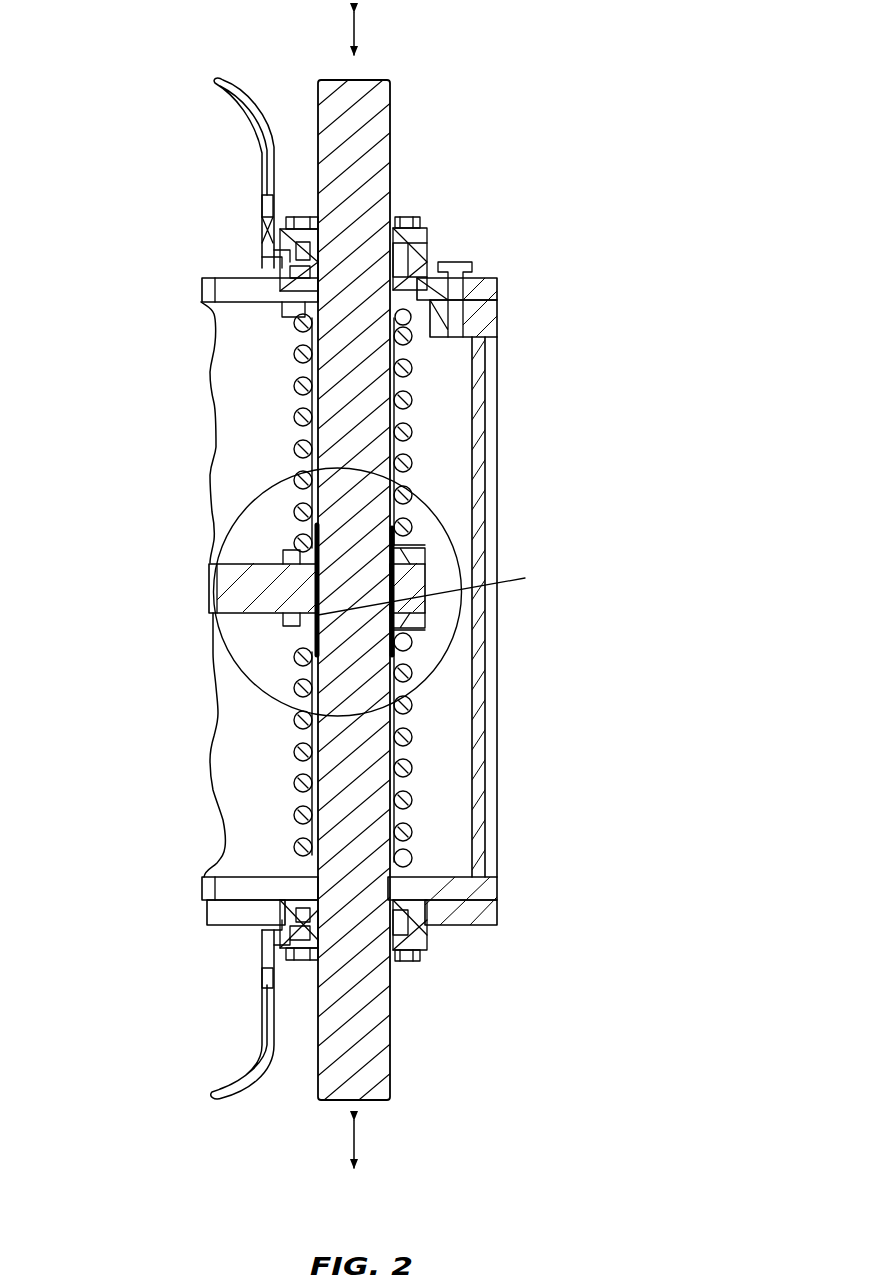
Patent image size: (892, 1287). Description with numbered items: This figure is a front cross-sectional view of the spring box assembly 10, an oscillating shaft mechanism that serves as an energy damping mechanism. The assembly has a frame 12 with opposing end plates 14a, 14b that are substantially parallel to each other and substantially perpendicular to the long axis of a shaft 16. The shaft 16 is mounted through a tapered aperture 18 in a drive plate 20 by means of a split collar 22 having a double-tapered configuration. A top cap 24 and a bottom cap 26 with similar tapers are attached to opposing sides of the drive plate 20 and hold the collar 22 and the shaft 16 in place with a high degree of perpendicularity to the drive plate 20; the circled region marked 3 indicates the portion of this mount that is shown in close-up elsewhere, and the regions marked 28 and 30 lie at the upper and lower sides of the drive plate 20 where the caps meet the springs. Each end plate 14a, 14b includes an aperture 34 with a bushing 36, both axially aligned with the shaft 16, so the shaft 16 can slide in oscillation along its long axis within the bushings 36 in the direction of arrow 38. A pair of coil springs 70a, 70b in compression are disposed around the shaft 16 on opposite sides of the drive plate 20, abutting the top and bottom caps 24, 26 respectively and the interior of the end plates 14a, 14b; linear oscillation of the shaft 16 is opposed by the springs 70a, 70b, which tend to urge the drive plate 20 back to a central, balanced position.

The detail circle 3 is at (455, 560).
The spring box assembly 10 is at (596, 226).
The frame 12 is at (497, 762).
The end plate 14a is at (292, 293).
The end plate 14b is at (440, 890).
The shaft 16 is at (372, 385).
The tapered aperture 18 is at (525, 578).
The drive plate 20 is at (218, 567).
The split collar 22 is at (316, 617).
The top cap 24 is at (420, 548).
The bottom cap 26 is at (405, 630).
The upper retainer 28 is at (255, 560).
The lower retainer 30 is at (235, 618).
The aperture 34 is at (295, 292).
The bushing 36 is at (410, 216).
The arrow 38 is at (357, 33).
The spring 70a is at (300, 410).
The spring 70b is at (300, 750).